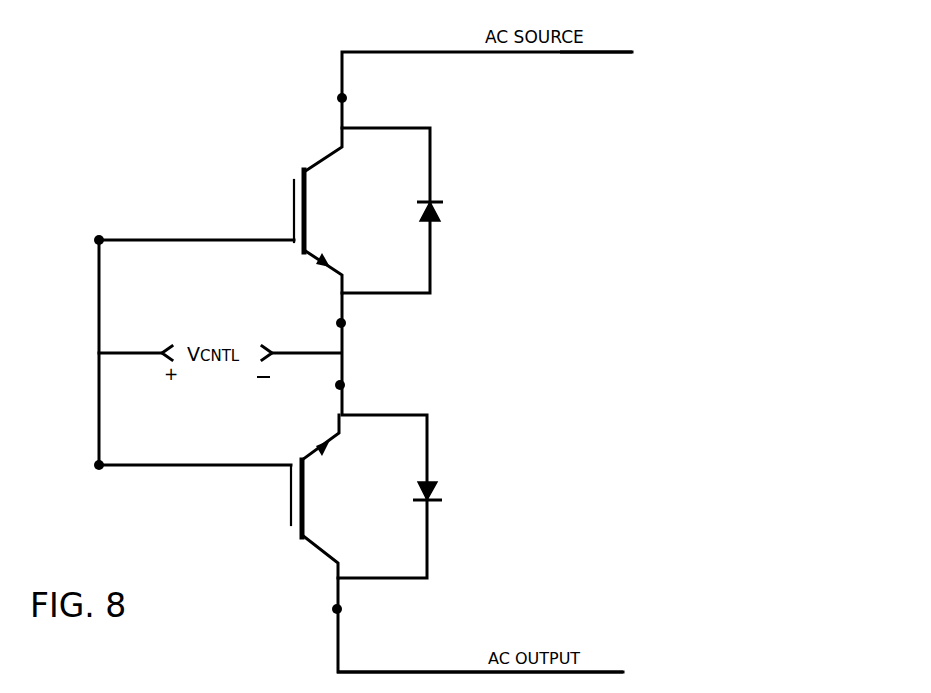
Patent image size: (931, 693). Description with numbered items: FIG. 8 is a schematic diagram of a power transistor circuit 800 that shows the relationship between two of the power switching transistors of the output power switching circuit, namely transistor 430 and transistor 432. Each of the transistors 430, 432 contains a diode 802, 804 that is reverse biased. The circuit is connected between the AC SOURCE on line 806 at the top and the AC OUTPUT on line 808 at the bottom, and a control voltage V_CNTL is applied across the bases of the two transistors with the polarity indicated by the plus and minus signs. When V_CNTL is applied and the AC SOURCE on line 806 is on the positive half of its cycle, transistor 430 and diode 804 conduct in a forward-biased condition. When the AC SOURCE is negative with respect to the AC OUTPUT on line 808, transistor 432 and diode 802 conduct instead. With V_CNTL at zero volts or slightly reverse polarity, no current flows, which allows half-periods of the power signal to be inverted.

The power transistor circuit 800 is at (135, 180).
The power switching transistor 430 is at (300, 166).
The power switching transistor 432 is at (295, 538).
The diode 802 is at (443, 210).
The diode 804 is at (442, 495).
The AC SOURCE line 806 is at (510, 52).
The AC OUTPUT line 808 is at (380, 672).